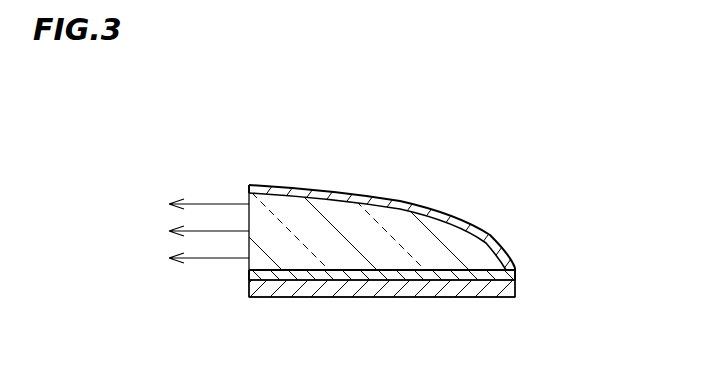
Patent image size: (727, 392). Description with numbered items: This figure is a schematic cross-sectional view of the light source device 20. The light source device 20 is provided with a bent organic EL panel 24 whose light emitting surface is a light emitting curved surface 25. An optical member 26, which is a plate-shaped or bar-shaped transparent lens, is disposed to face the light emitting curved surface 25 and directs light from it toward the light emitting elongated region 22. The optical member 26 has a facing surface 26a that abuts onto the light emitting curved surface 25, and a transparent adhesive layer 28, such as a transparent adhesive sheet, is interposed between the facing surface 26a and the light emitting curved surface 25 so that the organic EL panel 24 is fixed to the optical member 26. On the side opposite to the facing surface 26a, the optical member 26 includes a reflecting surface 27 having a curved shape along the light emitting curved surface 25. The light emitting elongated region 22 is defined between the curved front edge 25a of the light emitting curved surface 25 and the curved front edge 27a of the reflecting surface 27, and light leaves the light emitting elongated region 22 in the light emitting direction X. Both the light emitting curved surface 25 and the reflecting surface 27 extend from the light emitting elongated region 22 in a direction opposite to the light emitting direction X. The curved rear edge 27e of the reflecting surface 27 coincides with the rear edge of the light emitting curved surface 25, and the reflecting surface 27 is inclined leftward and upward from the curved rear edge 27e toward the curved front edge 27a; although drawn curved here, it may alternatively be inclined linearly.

The light source device 20 is at (215, 102).
The light emitting elongated region 22 is at (248, 219).
The organic EL panel 24 is at (326, 297).
The light emitting curved surface 25 is at (386, 280).
The curved front edge 25a is at (248, 282).
The optical member 26 is at (483, 223).
The facing surface 26a is at (312, 270).
The reflecting surface 27 is at (382, 202).
The curved front edge 27a is at (251, 190).
The curved rear edge 27e is at (515, 268).
The transparent adhesive layer 28 is at (485, 275).
The light emitting direction X is at (203, 257).